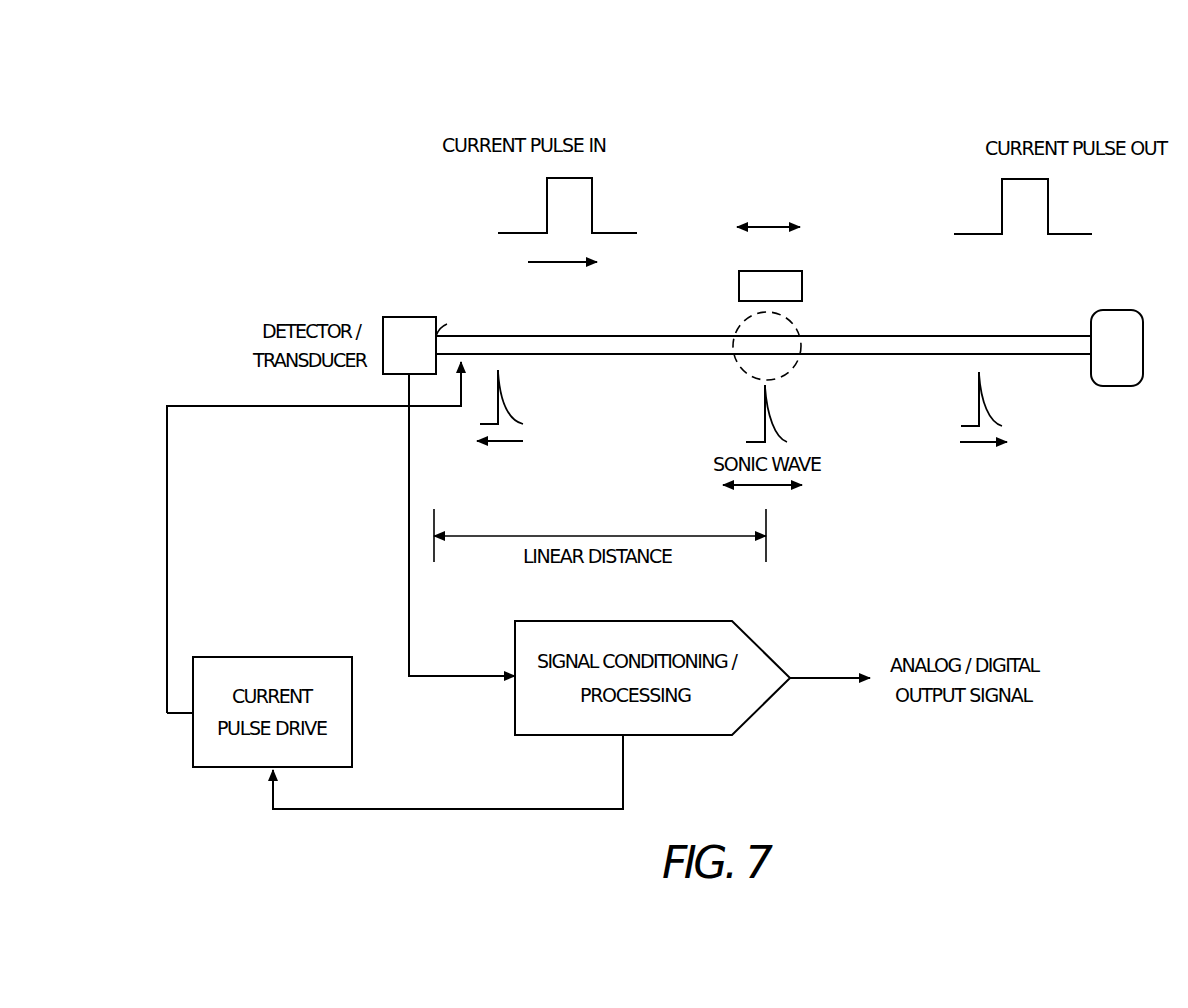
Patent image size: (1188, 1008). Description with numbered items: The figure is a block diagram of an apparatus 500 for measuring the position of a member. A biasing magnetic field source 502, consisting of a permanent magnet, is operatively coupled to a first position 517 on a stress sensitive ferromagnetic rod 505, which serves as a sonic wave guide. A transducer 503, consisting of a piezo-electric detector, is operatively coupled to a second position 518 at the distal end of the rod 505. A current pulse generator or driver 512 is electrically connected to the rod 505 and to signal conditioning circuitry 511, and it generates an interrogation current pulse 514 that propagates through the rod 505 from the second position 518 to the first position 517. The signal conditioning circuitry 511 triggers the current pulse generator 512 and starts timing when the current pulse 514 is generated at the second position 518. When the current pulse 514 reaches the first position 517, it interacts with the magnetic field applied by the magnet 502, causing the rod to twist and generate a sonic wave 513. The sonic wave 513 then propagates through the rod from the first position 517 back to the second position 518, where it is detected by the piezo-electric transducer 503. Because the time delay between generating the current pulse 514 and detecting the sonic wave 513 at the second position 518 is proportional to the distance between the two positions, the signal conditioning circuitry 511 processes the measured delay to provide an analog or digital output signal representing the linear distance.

The apparatus 500 is at (907, 105).
The biasing magnetic field source 502 is at (802, 289).
The transducer 503 is at (405, 316).
The stress sensitive ferromagnetic rod 505 is at (961, 335).
The signal conditioning circuitry 511 is at (762, 643).
The current pulse generator 512 is at (352, 714).
The sonic wave 513 is at (500, 393).
The interrogation current pulse 514 is at (592, 197).
The first position 517 is at (760, 338).
The second position 518 is at (440, 332).